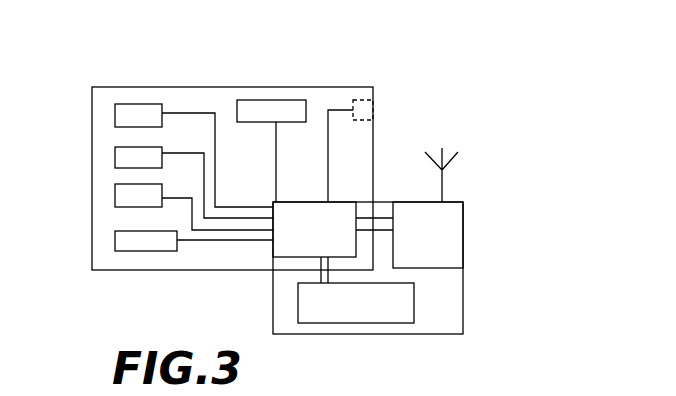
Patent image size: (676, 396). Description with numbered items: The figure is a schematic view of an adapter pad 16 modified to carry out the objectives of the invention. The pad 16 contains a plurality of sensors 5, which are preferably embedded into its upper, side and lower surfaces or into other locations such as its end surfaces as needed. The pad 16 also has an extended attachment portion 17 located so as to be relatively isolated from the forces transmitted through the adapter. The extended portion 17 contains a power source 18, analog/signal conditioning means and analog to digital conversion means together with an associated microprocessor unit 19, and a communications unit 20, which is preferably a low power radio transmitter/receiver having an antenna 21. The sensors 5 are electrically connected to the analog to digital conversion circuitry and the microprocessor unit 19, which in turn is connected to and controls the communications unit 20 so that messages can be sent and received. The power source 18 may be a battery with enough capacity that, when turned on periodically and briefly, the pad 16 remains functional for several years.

The sensors 5 is at (118, 115).
The adapter pad 16 is at (335, 88).
The extended attachment portion 17 is at (463, 306).
The power source 18 is at (343, 315).
The microprocessor unit 19 is at (291, 242).
The communications unit 20 is at (455, 236).
The antenna 21 is at (443, 186).